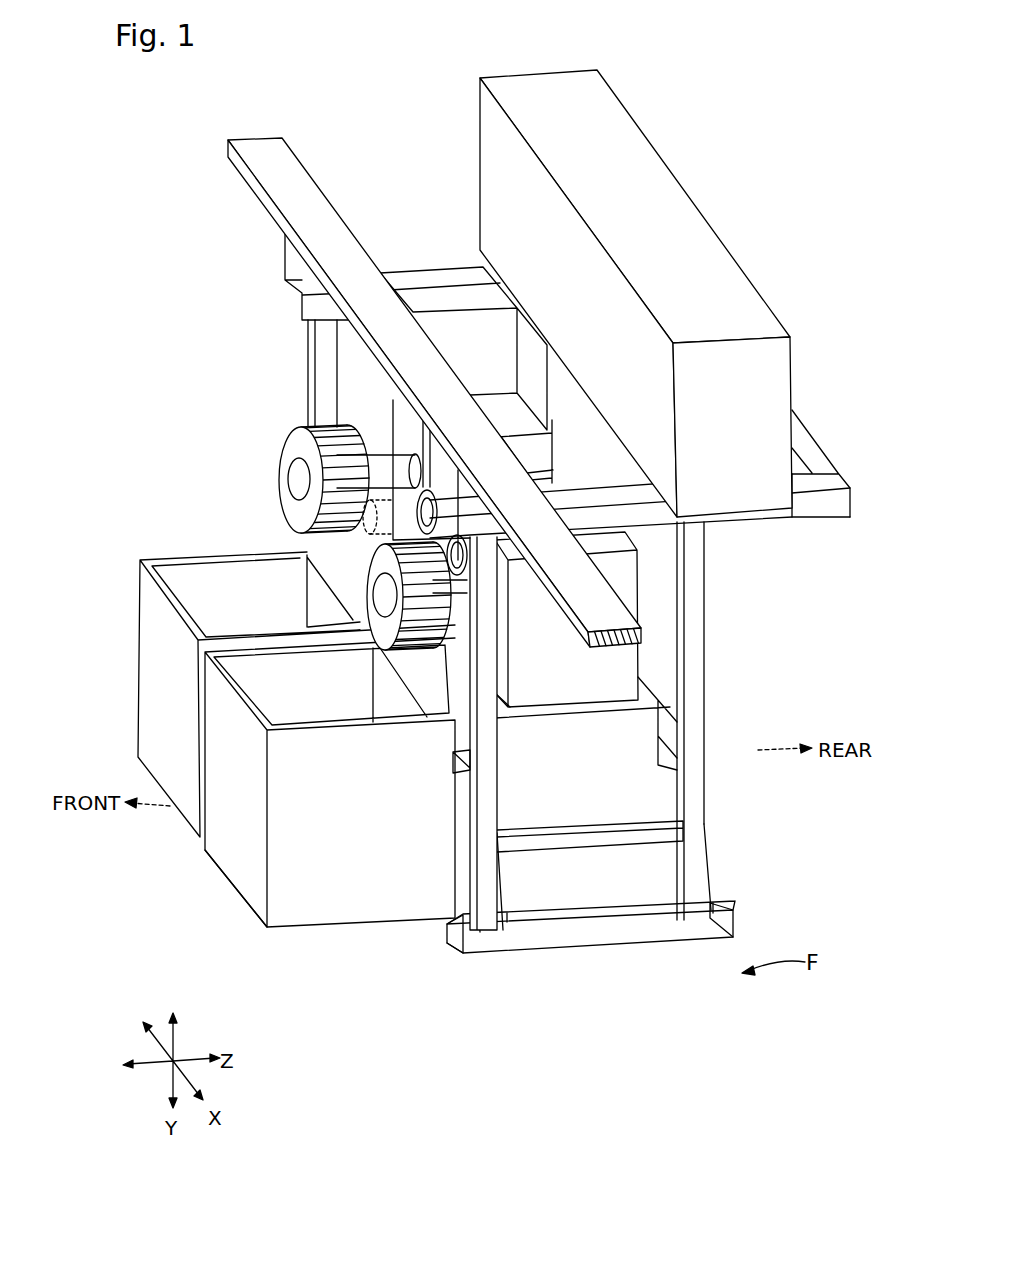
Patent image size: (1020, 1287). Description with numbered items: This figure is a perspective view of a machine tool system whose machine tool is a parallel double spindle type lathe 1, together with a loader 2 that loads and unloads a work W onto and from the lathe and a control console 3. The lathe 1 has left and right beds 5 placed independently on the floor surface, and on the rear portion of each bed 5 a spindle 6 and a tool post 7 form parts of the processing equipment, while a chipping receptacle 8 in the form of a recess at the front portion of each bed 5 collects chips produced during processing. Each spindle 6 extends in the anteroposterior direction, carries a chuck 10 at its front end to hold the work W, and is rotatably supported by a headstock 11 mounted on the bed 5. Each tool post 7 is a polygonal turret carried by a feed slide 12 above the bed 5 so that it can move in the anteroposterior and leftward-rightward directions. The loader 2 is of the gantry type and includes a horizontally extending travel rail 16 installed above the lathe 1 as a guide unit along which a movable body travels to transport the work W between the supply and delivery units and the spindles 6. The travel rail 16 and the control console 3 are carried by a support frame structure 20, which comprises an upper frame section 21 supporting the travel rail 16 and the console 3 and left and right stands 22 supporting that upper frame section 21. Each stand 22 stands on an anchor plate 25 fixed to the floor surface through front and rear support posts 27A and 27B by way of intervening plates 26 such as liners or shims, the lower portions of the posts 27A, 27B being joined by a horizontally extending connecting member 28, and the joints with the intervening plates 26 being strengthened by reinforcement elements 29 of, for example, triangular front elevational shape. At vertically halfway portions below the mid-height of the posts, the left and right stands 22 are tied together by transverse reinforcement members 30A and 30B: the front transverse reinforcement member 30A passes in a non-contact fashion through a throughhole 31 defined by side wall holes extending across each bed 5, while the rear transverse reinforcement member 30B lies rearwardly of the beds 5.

The parallel double spindle type lathe 1 is at (226, 318).
The loader 2 is at (400, 374).
The control console 3 is at (673, 178).
The bed 5 is at (280, 700).
The spindle 6 is at (415, 493).
The tool post 7 is at (353, 593).
The chipping receptacle 8 is at (253, 672).
The chuck 10 is at (316, 330).
The headstock 11 is at (567, 483).
The feed slide 12 is at (495, 390).
The travel rail 16 is at (265, 212).
The support frame structure 20 is at (556, 781).
The upper frame section 21 is at (820, 522).
The stand 22 is at (727, 720).
The anchor plate 25 is at (593, 942).
The intervening plate 26 is at (455, 940).
The front support post 27A is at (477, 817).
The rear support post 27B is at (702, 790).
The connecting member 28 is at (623, 837).
The reinforcement element 29 is at (710, 872).
The front transverse reinforcement member 30A is at (452, 758).
The rear transverse reinforcement member 30B is at (662, 714).
The throughhole 31 is at (242, 838).
The work W is at (362, 515).